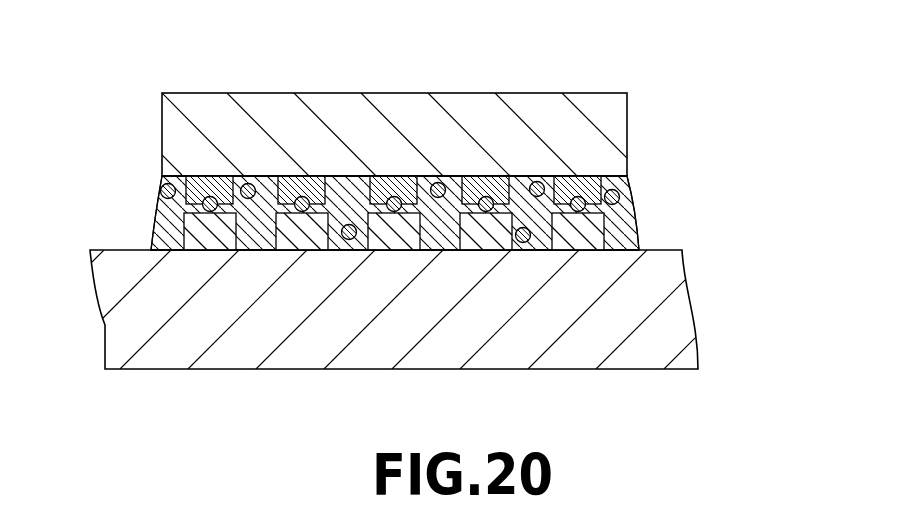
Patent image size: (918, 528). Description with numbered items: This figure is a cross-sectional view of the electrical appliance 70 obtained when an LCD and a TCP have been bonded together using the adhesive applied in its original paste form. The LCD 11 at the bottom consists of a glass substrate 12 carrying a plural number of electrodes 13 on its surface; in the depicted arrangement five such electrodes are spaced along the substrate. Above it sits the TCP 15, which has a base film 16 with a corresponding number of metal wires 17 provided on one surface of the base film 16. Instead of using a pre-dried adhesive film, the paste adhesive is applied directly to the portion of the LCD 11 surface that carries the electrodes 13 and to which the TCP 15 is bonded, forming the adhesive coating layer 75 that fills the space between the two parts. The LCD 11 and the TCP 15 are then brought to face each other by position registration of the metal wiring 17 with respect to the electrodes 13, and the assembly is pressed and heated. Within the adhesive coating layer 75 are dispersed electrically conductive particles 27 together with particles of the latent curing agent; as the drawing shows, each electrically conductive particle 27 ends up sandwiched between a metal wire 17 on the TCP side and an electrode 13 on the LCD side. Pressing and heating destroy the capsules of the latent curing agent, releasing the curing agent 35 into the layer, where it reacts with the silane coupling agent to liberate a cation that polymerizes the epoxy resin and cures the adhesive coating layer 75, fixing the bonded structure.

The bonded structure 70 is at (448, 196).
The LCD 11 is at (473, 291).
The glass substrate 12 is at (627, 333).
The electrode 13 is at (593, 230).
The TCP 15 is at (509, 136).
The base film 16 is at (605, 117).
The metal wire 17 is at (628, 178).
The electrically conductive particle 27 is at (210, 197).
The curing agent 35 is at (161, 186).
The adhesive coating layer 75 is at (633, 207).